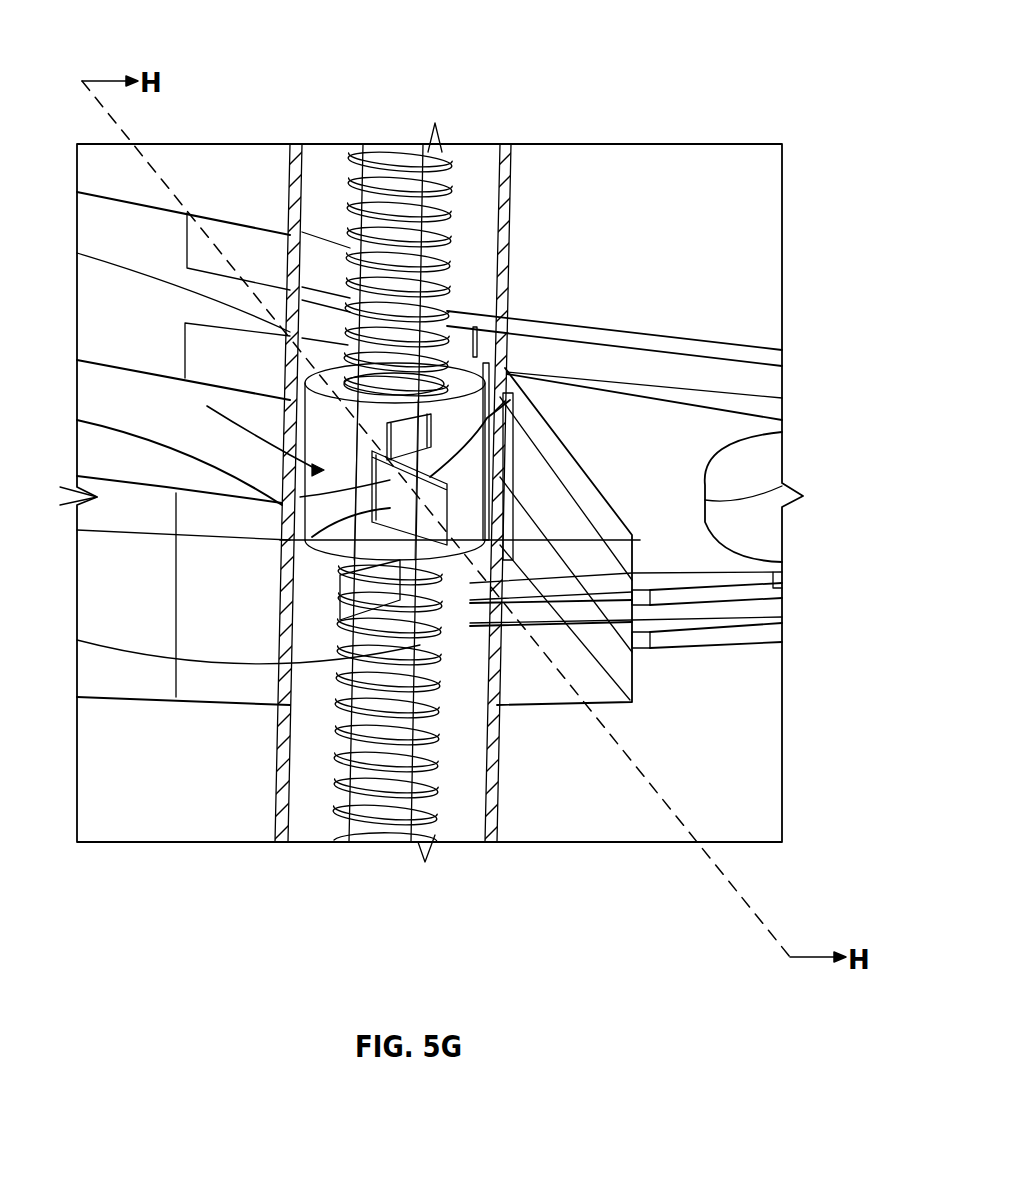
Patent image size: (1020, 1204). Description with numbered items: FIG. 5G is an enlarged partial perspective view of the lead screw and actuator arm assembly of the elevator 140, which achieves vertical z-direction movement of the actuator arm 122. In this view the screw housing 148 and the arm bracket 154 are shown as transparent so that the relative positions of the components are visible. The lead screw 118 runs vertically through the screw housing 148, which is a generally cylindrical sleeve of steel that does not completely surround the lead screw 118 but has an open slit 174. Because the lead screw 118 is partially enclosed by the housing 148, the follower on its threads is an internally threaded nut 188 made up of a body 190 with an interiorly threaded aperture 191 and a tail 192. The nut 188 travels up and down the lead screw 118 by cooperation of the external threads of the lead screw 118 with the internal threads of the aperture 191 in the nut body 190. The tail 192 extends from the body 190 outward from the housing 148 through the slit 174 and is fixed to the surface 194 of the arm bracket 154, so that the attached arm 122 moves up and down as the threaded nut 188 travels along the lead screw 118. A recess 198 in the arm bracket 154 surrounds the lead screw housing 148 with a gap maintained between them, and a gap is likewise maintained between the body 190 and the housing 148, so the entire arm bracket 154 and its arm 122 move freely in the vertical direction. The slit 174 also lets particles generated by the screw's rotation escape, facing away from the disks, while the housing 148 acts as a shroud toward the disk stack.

The elevator 140 is at (754, 41).
The lead screw 118 is at (432, 150).
The screw housing 148 is at (512, 150).
The arm bracket 154 is at (157, 673).
The slit 174 is at (350, 817).
The body 190 is at (465, 362).
The interiorly threaded aperture 191 is at (430, 355).
The tail 192 is at (388, 512).
The recess 198 is at (520, 372).
The surface 194 is at (513, 430).
The actuator arm 122 is at (768, 408).
The threaded nut 188 is at (238, 436).